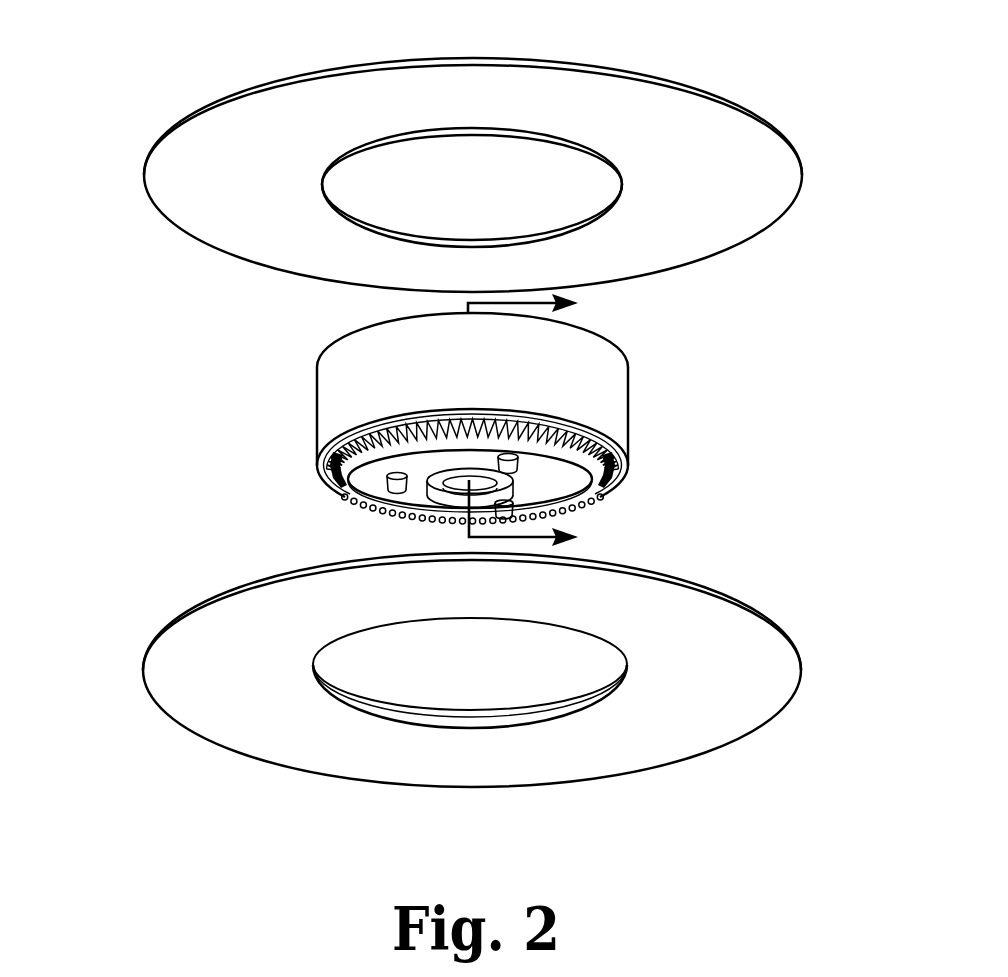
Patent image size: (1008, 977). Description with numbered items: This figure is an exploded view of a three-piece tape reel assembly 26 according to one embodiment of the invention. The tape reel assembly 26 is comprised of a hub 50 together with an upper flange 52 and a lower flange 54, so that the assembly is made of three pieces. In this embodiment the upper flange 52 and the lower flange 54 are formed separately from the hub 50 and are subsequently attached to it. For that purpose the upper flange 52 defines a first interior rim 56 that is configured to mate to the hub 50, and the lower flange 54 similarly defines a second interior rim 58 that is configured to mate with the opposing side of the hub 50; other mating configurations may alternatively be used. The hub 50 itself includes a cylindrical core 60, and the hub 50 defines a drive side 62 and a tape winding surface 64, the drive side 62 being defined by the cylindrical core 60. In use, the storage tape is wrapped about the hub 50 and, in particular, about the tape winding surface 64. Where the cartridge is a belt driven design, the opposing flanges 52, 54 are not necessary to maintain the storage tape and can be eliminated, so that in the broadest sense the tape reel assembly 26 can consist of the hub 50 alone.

The tape reel assembly 26 is at (103, 107).
The hub 50 is at (443, 431).
The upper flange 52 is at (511, 146).
The lower flange 54 is at (505, 704).
The first interior rim 56 is at (471, 129).
The second interior rim 58 is at (410, 722).
The cylindrical core 60 is at (603, 481).
The drive side 62 is at (368, 476).
The tape winding surface 64 is at (583, 398).